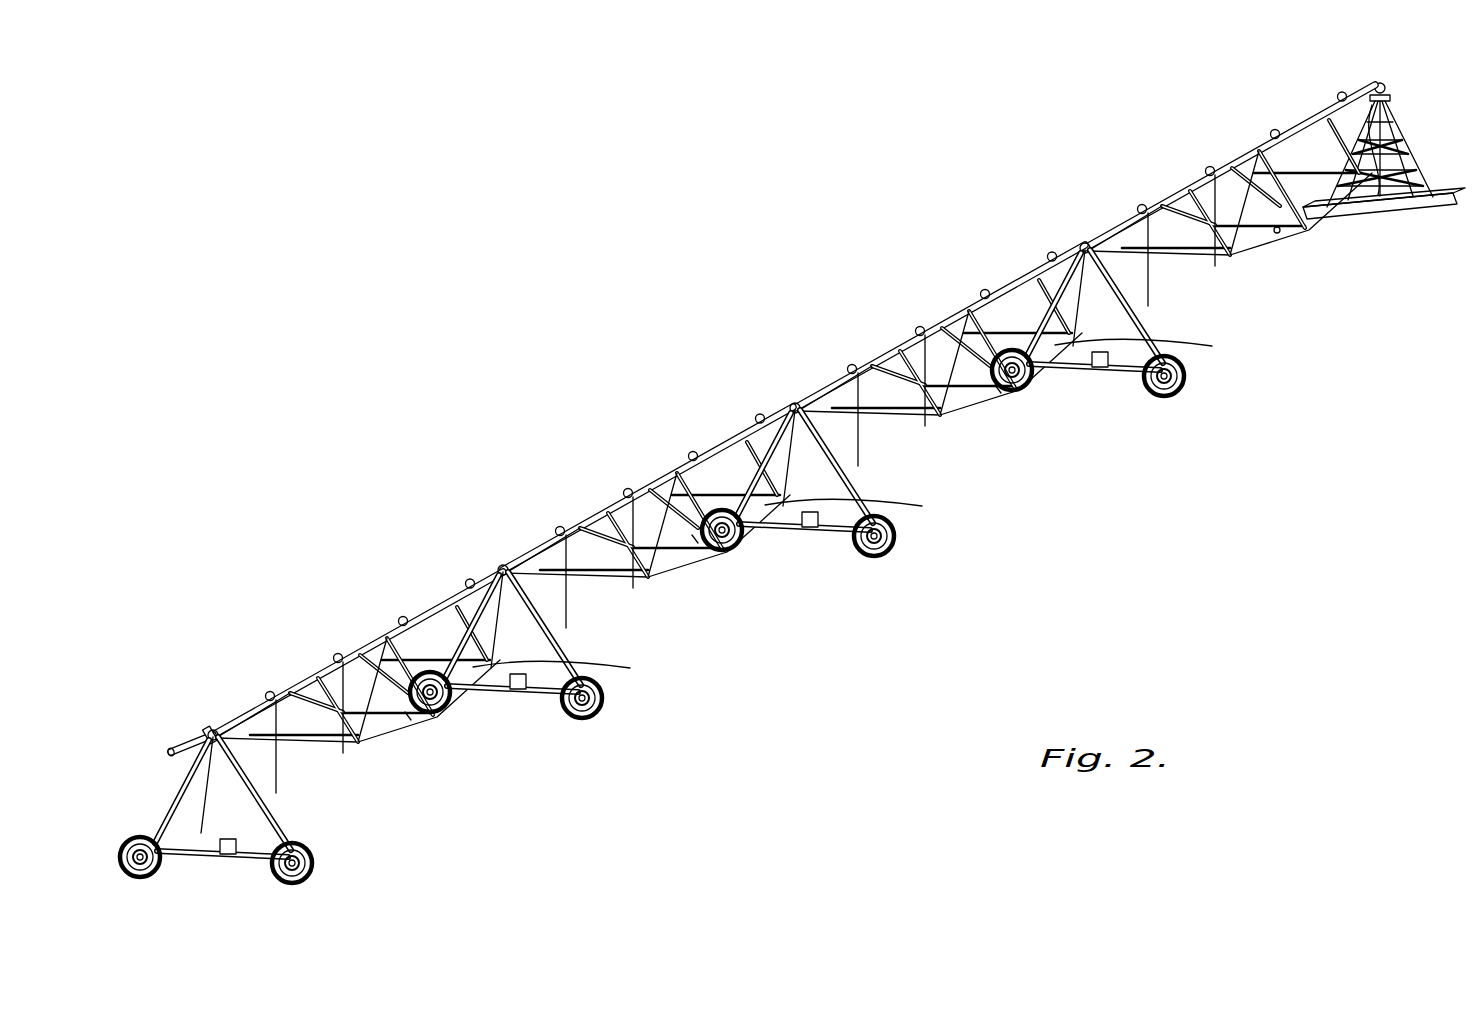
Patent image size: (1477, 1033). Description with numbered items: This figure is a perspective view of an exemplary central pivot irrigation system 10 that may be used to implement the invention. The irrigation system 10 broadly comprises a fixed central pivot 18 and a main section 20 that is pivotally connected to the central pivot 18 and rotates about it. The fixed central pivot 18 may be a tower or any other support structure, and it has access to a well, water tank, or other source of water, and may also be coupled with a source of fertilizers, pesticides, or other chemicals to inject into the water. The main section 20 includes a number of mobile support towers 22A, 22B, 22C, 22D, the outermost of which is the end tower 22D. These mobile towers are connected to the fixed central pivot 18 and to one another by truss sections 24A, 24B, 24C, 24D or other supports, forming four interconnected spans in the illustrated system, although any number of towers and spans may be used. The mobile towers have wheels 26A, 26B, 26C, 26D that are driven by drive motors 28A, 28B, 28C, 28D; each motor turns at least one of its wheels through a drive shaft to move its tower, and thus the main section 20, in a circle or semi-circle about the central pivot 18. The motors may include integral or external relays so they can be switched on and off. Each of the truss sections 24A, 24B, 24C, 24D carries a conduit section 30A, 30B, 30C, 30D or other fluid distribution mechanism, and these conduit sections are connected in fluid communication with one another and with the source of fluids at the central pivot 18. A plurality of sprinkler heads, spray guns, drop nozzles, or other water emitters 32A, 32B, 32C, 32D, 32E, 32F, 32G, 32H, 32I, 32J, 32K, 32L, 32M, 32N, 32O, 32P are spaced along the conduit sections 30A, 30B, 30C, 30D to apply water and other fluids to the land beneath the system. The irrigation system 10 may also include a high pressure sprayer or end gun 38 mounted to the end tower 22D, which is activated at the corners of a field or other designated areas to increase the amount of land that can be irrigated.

The irrigation system 10 is at (617, 268).
The fixed central pivot 18 is at (1384, 159).
The main section 20 is at (896, 214).
The mobile support tower 22A is at (1131, 282).
The mobile support tower 22B is at (833, 444).
The mobile support tower 22C is at (559, 612).
The end tower 22D is at (248, 775).
The truss section 24A is at (1330, 242).
The truss section 24B is at (985, 424).
The truss section 24C is at (757, 582).
The truss section 24D is at (408, 748).
The wheels 26A is at (1015, 372).
The wheels 26B is at (728, 530).
The wheels 26C is at (442, 692).
The wheels 26D is at (140, 878).
The drive motor 28A is at (1100, 368).
The drive motor 28B is at (810, 528).
The drive motor 28C is at (522, 690).
The drive motor 28D is at (228, 855).
The conduit section 30A is at (1326, 130).
The conduit section 30B is at (1010, 287).
The conduit section 30C is at (730, 444).
The conduit section 30D is at (378, 642).
The water emitter 32A is at (1376, 150).
The water emitter 32B is at (1277, 232).
The water emitter 32C is at (1215, 268).
The water emitter 32D is at (1148, 305).
The water emitter 32E is at (1180, 348).
The water emitter 32F is at (1000, 392).
The water emitter 32G is at (937, 422).
The water emitter 32H is at (858, 462).
The water emitter 32I is at (788, 508).
The water emitter 32J is at (697, 542).
The water emitter 32K is at (635, 590).
The water emitter 32L is at (568, 620).
The water emitter 32M is at (565, 668).
The water emitter 32N is at (410, 718).
The water emitter 32O is at (345, 758).
The water emitter 32P is at (278, 790).
The end gun 38 is at (178, 750).